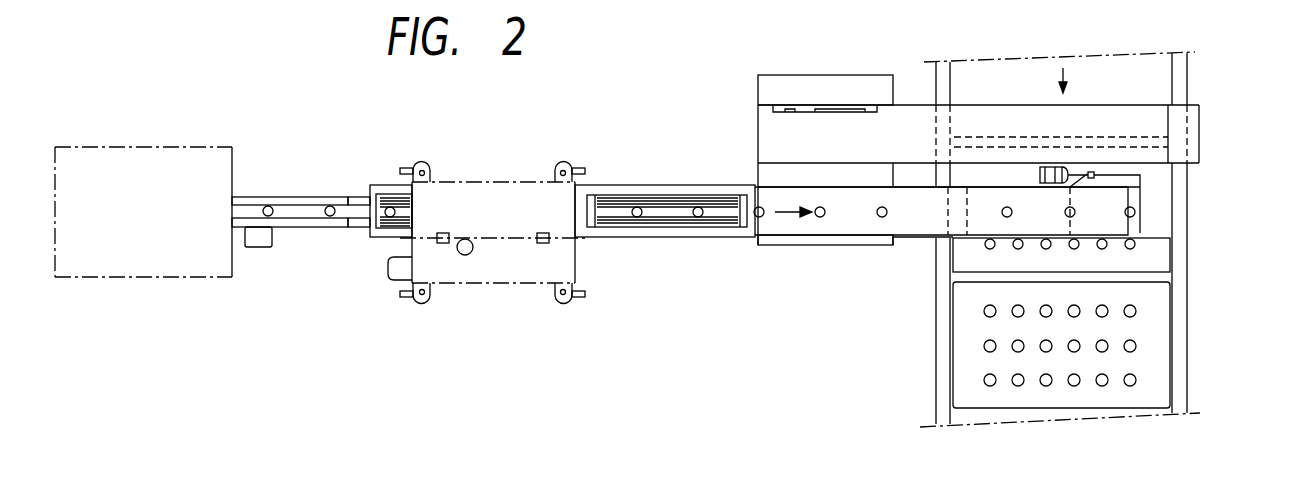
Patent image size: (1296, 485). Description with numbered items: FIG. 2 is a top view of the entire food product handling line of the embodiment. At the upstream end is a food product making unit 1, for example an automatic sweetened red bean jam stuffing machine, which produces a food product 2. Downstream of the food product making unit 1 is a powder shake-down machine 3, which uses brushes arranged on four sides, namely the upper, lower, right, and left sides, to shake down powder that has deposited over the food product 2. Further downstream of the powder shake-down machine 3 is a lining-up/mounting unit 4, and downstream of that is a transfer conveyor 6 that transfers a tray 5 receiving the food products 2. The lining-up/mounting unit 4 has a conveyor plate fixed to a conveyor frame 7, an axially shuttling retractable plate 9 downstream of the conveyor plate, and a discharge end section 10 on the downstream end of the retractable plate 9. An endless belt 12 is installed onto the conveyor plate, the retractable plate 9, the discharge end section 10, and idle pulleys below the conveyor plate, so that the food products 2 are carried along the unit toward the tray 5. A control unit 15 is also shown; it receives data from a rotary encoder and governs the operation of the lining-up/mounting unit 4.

The food product making unit 1 is at (168, 147).
The food product 2 is at (332, 197).
The powder shake-down machine 3 is at (500, 182).
The lining-up/mounting unit 4 is at (757, 118).
The tray 5 is at (1163, 205).
The transfer conveyor 6 is at (1180, 84).
The conveyor frame 7 is at (786, 247).
The retractable plate 9 is at (912, 240).
The discharge end section 10 is at (1130, 223).
The endless belt 12 is at (862, 237).
The control unit 15 is at (873, 75).